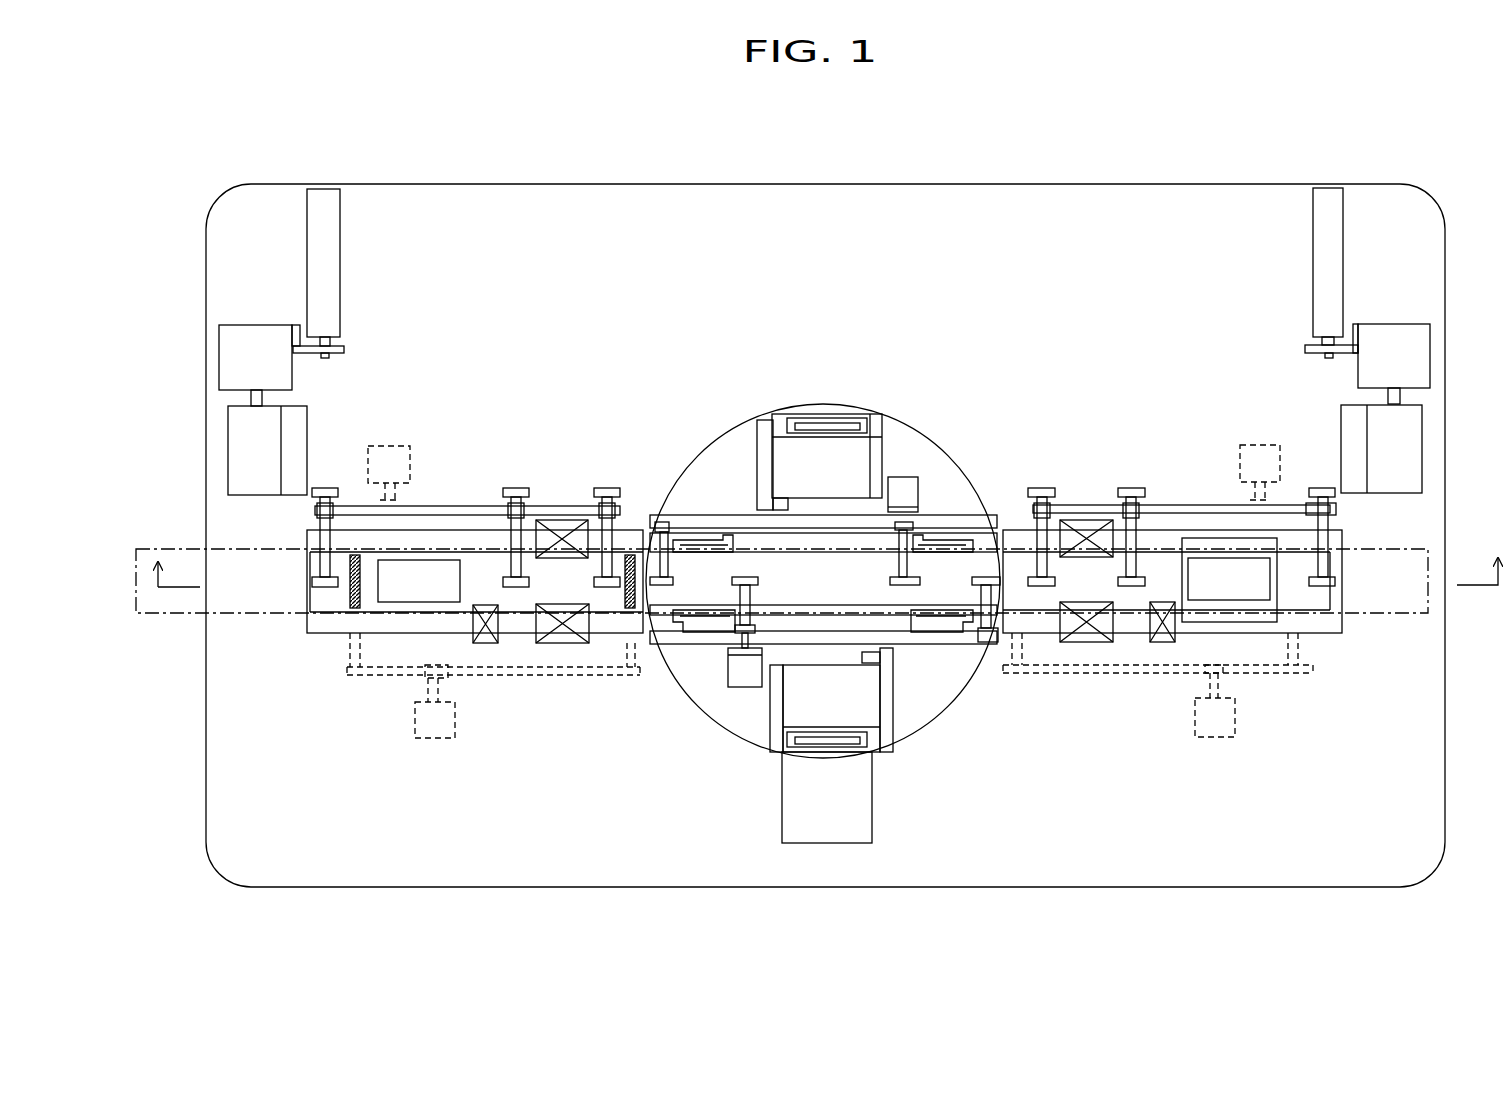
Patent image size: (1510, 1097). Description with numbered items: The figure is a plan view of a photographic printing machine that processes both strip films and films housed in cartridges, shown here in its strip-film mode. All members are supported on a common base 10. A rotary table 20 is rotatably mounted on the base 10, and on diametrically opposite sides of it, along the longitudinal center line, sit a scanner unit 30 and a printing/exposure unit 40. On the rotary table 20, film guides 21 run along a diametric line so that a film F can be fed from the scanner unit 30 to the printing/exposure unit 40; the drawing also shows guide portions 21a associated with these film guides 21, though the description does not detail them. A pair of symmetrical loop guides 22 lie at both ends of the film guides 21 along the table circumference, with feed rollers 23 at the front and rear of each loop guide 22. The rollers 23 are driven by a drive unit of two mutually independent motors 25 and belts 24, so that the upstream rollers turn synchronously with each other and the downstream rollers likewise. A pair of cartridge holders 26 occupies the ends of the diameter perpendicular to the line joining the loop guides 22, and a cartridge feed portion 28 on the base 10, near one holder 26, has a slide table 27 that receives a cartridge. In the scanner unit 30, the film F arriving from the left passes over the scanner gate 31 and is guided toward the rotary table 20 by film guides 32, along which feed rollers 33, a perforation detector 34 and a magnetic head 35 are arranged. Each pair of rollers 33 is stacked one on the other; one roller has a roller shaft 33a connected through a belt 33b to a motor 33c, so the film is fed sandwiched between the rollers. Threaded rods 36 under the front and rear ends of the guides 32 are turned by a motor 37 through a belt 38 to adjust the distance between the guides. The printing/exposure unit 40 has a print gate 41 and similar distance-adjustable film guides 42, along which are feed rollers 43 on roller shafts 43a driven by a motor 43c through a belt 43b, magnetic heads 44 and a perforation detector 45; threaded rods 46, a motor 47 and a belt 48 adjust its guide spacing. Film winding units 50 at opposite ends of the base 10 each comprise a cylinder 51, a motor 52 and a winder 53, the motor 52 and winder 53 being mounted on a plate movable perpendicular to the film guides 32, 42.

The common base 10 is at (1049, 190).
The film F is at (187, 553).
The rotary table 20 is at (831, 606).
The film guides 21 is at (822, 545).
The stepped holding plate 21a is at (762, 565).
The loop guides 22 is at (690, 540).
The feed rollers 23 is at (740, 592).
The belts 24 is at (905, 510).
The motors 25 is at (903, 478).
The cartridge holders 26 is at (803, 447).
The slide table 27 is at (857, 822).
The cartridge feed portion 28 is at (888, 798).
The scanner unit 30 is at (444, 569).
The scanner gate 31 is at (402, 586).
The film guides 32 is at (378, 632).
The feed rollers 33 is at (318, 577).
The roller shaft 33a is at (357, 500).
The belt 33b is at (447, 505).
The motor 33c is at (386, 446).
The perforation detector 34 is at (488, 632).
The magnetic head 35 is at (566, 550).
The threaded rods 36 is at (338, 598).
The motor 37 is at (452, 740).
The belt 38 is at (480, 677).
The printing/exposure unit 40 is at (1208, 587).
The print gate 41 is at (1213, 565).
The film guides 42 is at (1127, 623).
The feed rollers 43 is at (1050, 577).
The roller shafts 43a is at (1128, 578).
The belt 43b is at (1107, 505).
The motor 43c is at (1262, 446).
The magnetic heads 44 is at (1083, 555).
The perforation detector 45 is at (1163, 640).
The threaded rods 46 is at (1005, 692).
The motor 47 is at (1196, 740).
The belt 48 is at (1240, 675).
The film winding units 50 is at (277, 342).
The cylinder 51 is at (328, 219).
The motor 52 is at (250, 333).
The winder 53 is at (241, 446).